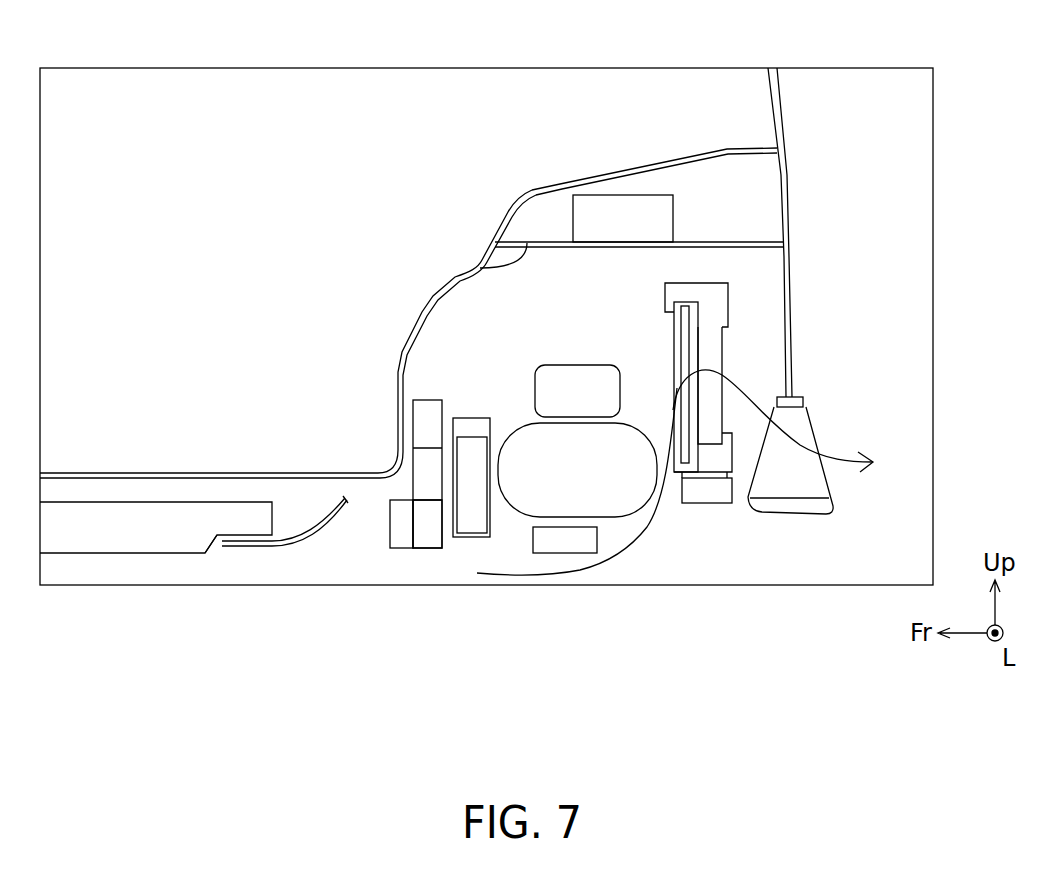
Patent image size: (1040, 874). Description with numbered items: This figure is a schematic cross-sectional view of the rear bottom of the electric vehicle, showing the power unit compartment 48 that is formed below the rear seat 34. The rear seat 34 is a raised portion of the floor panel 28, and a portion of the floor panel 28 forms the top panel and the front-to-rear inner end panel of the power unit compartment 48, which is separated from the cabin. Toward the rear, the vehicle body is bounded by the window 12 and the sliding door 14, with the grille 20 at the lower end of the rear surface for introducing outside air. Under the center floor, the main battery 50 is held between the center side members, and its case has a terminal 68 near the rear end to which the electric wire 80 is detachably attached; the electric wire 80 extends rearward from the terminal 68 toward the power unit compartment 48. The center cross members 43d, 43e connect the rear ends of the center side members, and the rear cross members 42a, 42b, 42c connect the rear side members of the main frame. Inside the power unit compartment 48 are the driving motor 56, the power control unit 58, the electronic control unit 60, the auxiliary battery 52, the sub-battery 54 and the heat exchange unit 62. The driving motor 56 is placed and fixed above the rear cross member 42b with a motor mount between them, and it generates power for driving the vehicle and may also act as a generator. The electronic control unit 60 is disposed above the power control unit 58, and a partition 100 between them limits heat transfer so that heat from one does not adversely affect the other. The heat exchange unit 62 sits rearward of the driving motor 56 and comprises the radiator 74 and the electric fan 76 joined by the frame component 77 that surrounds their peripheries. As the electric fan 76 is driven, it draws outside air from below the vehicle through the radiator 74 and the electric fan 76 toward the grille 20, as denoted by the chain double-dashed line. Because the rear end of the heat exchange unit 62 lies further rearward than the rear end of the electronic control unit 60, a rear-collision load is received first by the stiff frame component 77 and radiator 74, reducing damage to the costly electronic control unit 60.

The window 12 is at (782, 92).
The sliding door 14 is at (790, 245).
The grille 20 is at (827, 497).
The floor panel 28 is at (418, 327).
The rear seat 34 is at (570, 183).
The rear cross member 42a is at (430, 400).
The rear cross member 42b is at (565, 553).
The rear cross member 42c is at (705, 503).
The center cross member 43d is at (405, 550).
The center cross member 43e is at (433, 550).
The power unit compartment 48 is at (581, 303).
The main battery 50 is at (137, 553).
The auxiliary battery 52 is at (462, 537).
The sub-battery 54 is at (490, 513).
The driving motor 56 is at (517, 437).
The power control unit 58 is at (570, 365).
The electronic control unit 60 is at (667, 210).
The heat exchange unit 62 is at (738, 298).
The terminal 68 is at (215, 553).
The radiator 74 is at (673, 322).
The electric fan 76 is at (722, 347).
The frame component 77 is at (707, 283).
The electric wire 80 is at (278, 547).
The partition 100 is at (478, 267).